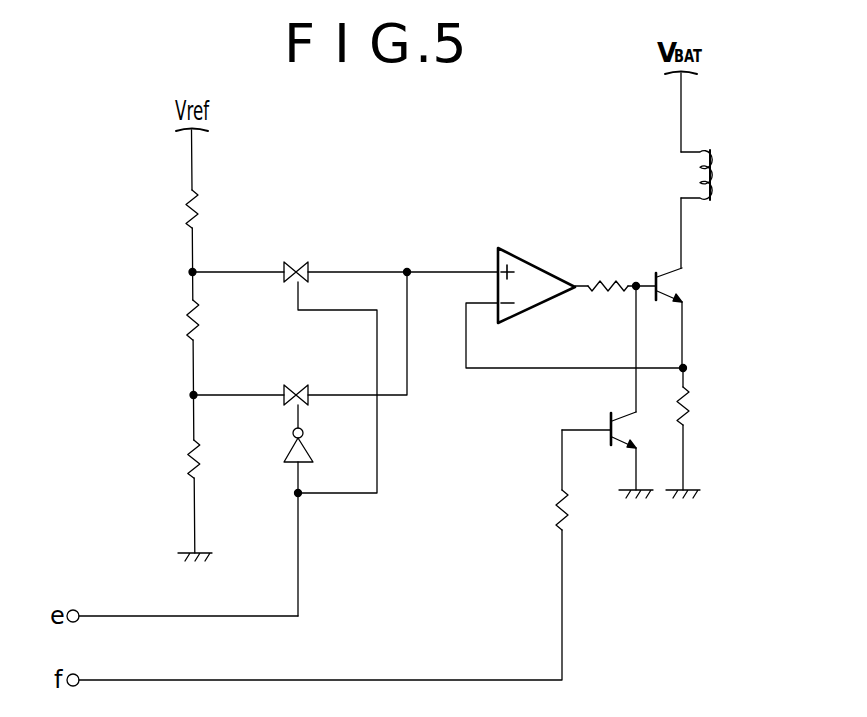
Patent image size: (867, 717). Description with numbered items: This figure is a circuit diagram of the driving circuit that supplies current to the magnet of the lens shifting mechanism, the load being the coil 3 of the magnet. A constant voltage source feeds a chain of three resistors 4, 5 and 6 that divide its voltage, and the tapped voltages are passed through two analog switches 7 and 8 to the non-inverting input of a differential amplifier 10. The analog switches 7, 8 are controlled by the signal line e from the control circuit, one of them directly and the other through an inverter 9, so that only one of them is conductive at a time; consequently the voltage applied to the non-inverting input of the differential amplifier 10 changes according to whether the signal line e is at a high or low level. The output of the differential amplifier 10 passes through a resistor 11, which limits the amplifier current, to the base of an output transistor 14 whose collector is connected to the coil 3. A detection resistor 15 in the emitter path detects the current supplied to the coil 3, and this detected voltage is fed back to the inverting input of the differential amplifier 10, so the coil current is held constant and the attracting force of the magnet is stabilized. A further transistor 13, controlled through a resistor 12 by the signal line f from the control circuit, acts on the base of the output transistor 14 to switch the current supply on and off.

The coil 3 is at (714, 172).
The resistor 4 is at (184, 207).
The resistor 5 is at (184, 319).
The resistor 6 is at (184, 451).
The analog switch 7 is at (298, 258).
The analog switch 8 is at (296, 382).
The inverter 9 is at (292, 442).
The differential amplifier 10 is at (537, 262).
The resistor 11 is at (613, 270).
The resistor 12 is at (556, 509).
The transistor 13 is at (620, 410).
The output transistor 14 is at (685, 287).
The detection resistor 15 is at (692, 408).